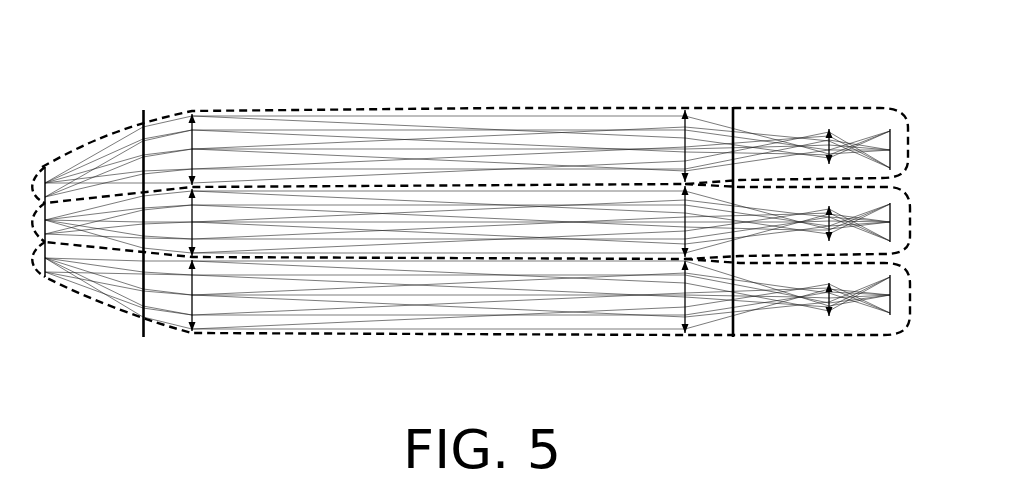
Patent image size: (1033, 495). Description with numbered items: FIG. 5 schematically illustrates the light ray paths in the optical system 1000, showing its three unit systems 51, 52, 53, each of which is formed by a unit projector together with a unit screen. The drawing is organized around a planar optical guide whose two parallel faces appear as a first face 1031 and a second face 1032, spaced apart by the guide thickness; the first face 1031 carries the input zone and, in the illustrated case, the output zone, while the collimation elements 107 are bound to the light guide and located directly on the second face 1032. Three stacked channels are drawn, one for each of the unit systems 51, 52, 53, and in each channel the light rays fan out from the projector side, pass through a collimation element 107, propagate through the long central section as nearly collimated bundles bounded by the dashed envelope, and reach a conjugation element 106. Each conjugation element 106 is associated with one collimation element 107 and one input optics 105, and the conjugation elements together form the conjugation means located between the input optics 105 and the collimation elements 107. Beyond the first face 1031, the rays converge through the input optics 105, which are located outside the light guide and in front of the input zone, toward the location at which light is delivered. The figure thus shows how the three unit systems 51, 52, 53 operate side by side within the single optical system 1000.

The optical system 1000 is at (499, 86).
The second face 1032 is at (143, 113).
The first face 1031 is at (737, 322).
The collimation element 107 is at (196, 122).
The conjugation element 106 is at (684, 130).
The input optics 105 is at (830, 130).
The unit system 51 is at (768, 117).
The unit system 52 is at (902, 222).
The unit system 53 is at (438, 335).